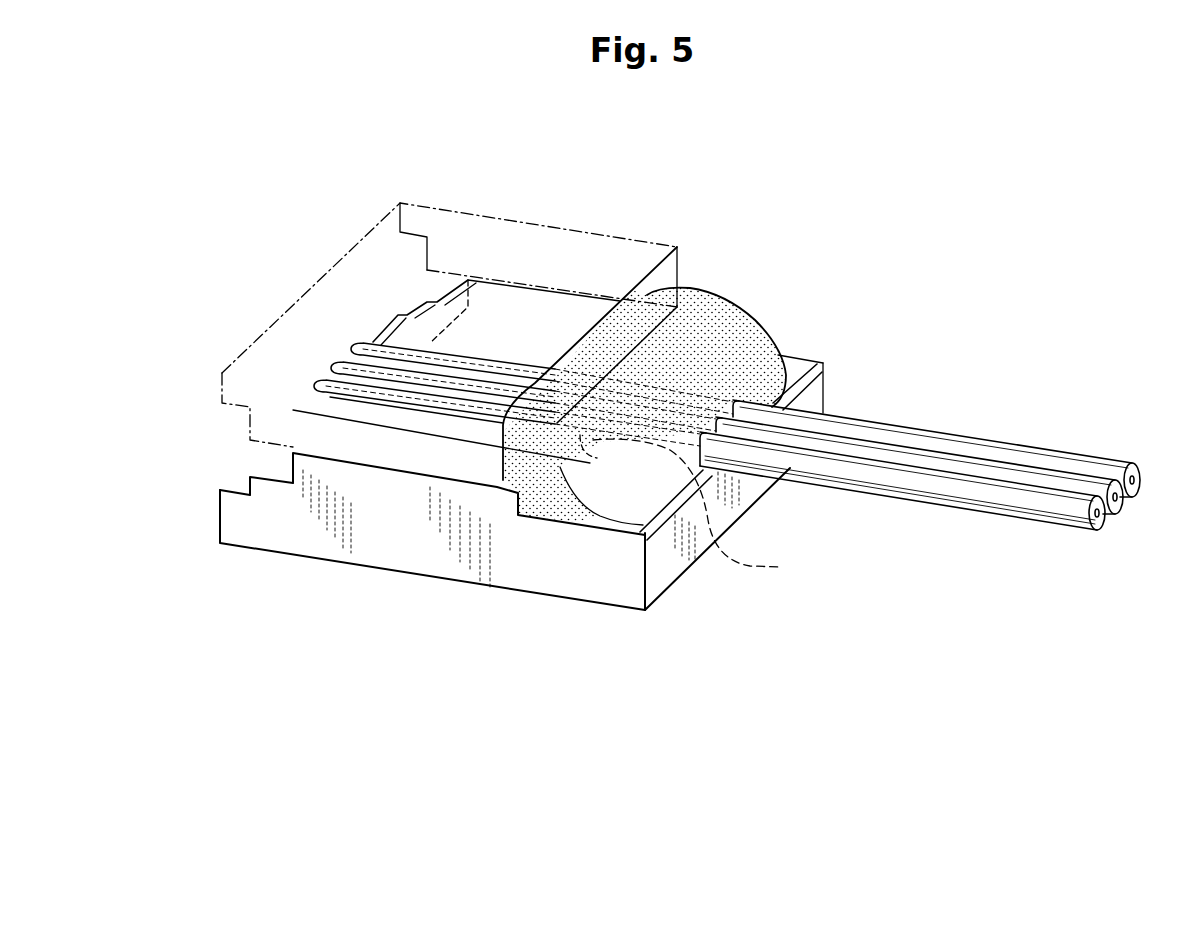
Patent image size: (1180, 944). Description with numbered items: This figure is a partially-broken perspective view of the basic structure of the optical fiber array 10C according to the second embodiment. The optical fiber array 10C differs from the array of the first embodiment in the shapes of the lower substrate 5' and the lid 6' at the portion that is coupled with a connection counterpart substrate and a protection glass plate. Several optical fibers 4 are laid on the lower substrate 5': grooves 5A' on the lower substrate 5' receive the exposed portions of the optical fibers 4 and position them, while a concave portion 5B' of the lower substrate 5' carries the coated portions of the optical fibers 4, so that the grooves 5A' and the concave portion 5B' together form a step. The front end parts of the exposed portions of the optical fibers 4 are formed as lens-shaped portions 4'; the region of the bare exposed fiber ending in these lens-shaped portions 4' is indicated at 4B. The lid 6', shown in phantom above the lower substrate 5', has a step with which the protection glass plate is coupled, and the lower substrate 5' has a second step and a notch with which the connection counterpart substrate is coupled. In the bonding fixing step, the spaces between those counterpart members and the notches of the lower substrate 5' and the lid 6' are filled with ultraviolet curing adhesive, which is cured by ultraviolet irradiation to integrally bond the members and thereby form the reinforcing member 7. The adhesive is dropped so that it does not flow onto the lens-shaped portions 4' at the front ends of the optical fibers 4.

The optical fiber array 10C is at (852, 242).
The optical fibers 4 is at (920, 447).
The lens-shaped portions 4' is at (523, 360).
The bare fiber portion 4B is at (310, 405).
The lower substrate 5' is at (521, 495).
The grooves 5A' is at (703, 507).
The concave portion 5B' is at (606, 563).
The lid 6' is at (420, 325).
The reinforcing member 7 is at (733, 313).